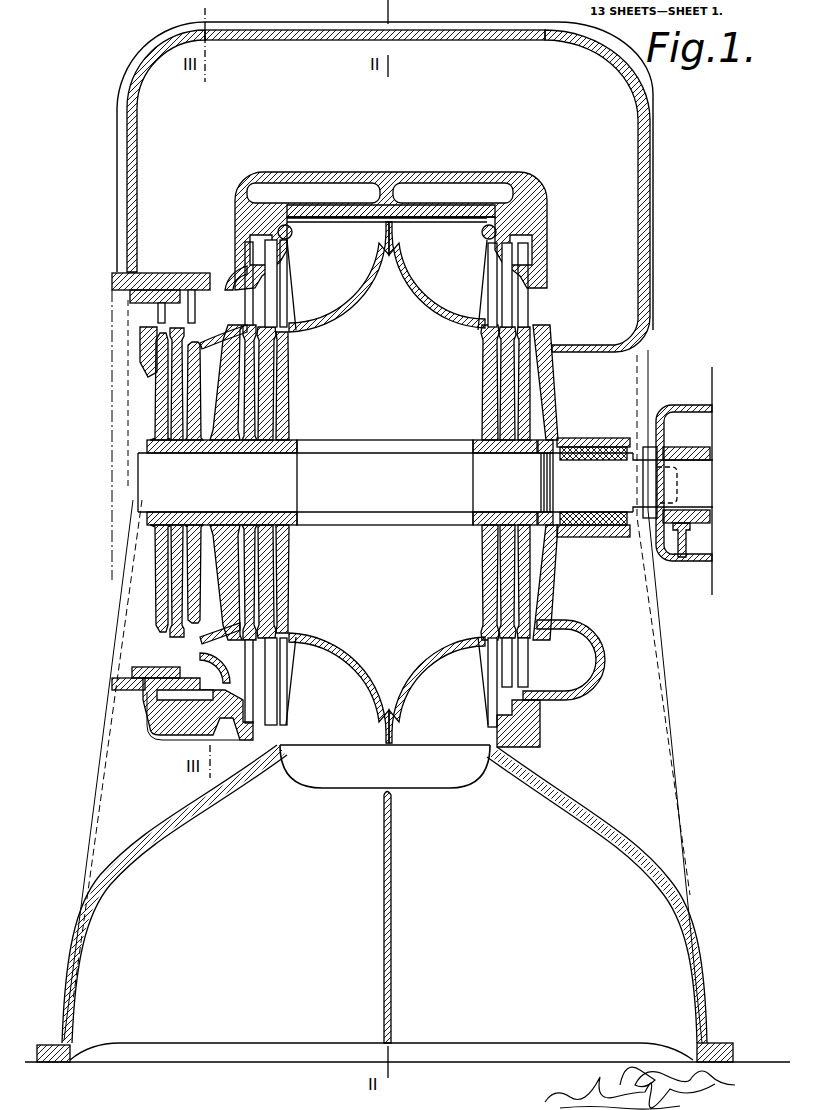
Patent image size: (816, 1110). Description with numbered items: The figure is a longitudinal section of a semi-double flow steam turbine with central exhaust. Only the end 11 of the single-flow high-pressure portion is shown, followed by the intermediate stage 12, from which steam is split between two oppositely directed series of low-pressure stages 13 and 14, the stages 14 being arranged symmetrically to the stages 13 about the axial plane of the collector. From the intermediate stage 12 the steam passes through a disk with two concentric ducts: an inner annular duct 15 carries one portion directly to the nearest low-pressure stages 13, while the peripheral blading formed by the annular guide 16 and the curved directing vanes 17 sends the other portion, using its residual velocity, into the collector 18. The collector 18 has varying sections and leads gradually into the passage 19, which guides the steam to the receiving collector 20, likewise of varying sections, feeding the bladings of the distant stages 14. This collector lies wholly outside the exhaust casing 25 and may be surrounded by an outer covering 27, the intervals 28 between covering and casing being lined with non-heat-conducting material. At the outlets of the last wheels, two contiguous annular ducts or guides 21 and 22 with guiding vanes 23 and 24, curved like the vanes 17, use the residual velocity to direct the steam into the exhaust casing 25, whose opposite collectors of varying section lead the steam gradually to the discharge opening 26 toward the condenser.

The end of single-flow high-pressure portion 11 is at (147, 352).
The intermediate stage 12 is at (186, 313).
The low-pressure stages (nearest series) 13 is at (271, 273).
The low-pressure stages (distant series) 14 is at (503, 303).
The inner annular duct 15 is at (213, 331).
The annular guide 16 is at (196, 273).
The directing vanes 17 is at (212, 283).
The collector 18 is at (133, 192).
The passage 19 is at (303, 40).
The receiving collector 20 is at (640, 208).
The annular guide (duct) 21 is at (332, 317).
The annular guide (duct) 22 is at (418, 306).
The guiding vanes 23 is at (350, 278).
The guiding vanes 24 is at (452, 300).
The exhaust casing 25 is at (412, 207).
The discharge opening 26 is at (315, 1057).
The outer covering 27 is at (267, 18).
The intervals 28 is at (283, 192).